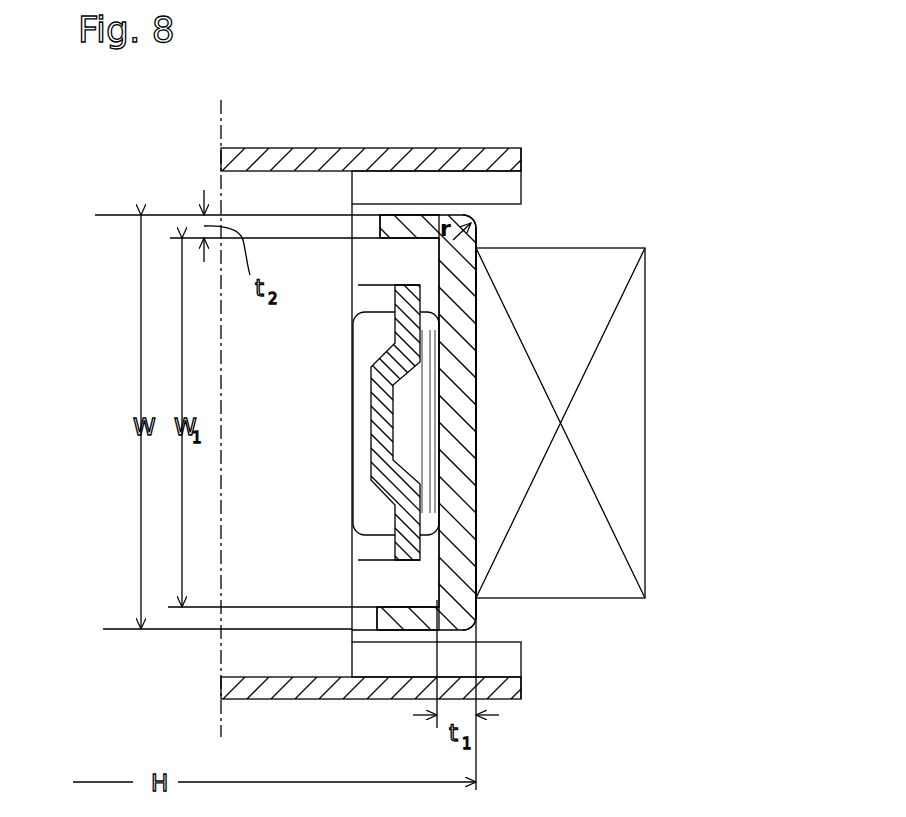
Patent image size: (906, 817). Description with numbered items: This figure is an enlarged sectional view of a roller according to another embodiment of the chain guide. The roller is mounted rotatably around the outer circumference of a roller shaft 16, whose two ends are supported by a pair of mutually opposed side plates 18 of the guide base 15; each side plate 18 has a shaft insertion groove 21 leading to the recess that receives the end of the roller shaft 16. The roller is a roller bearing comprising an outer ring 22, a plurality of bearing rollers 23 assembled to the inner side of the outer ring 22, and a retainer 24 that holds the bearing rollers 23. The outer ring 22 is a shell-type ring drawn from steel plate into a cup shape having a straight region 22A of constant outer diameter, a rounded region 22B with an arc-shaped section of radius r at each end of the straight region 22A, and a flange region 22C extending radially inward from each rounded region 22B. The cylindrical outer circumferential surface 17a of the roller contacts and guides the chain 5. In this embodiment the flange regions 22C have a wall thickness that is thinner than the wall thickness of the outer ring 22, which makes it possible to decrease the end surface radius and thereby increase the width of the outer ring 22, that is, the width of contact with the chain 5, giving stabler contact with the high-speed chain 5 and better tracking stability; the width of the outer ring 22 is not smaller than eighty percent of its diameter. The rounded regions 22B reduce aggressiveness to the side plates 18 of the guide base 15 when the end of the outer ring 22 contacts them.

The chain 5 is at (637, 305).
The guide base 15 is at (300, 690).
The roller shaft 16 is at (287, 168).
The outer circumferential surface 17a is at (477, 488).
The side plate 18 is at (521, 160).
The shaft insertion groove 21 is at (447, 186).
The outer ring 22 is at (477, 347).
The straight region 22A is at (468, 410).
The rounded region 22B is at (477, 231).
The flange region 22C is at (400, 232).
The bearing roller 23 is at (358, 360).
The retainer 24 is at (378, 430).